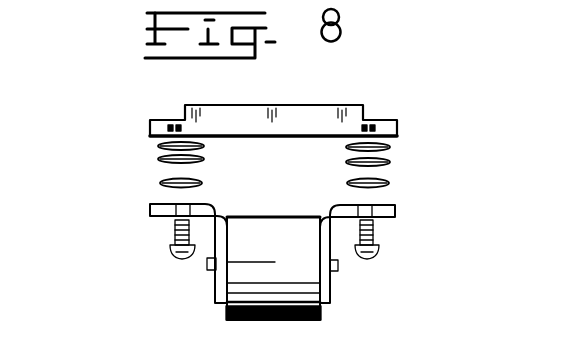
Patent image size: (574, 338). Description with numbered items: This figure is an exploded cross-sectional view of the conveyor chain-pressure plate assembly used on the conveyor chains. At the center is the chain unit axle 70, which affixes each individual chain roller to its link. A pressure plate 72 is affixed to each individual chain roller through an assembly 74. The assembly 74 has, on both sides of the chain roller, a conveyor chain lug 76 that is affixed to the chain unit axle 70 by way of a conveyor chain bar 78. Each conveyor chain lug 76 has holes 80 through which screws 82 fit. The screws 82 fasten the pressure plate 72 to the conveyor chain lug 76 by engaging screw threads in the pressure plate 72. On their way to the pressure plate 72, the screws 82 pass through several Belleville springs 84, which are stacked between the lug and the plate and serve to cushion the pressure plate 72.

The chain unit axle 70 is at (207, 265).
The pressure plate 72 is at (372, 120).
The assembly 74 is at (96, 181).
The conveyor chain lug 76 is at (152, 222).
The conveyor chain bar 78 is at (330, 290).
The holes 80 is at (182, 203).
The screws 82 is at (175, 235).
The Belleville springs 84 is at (158, 152).